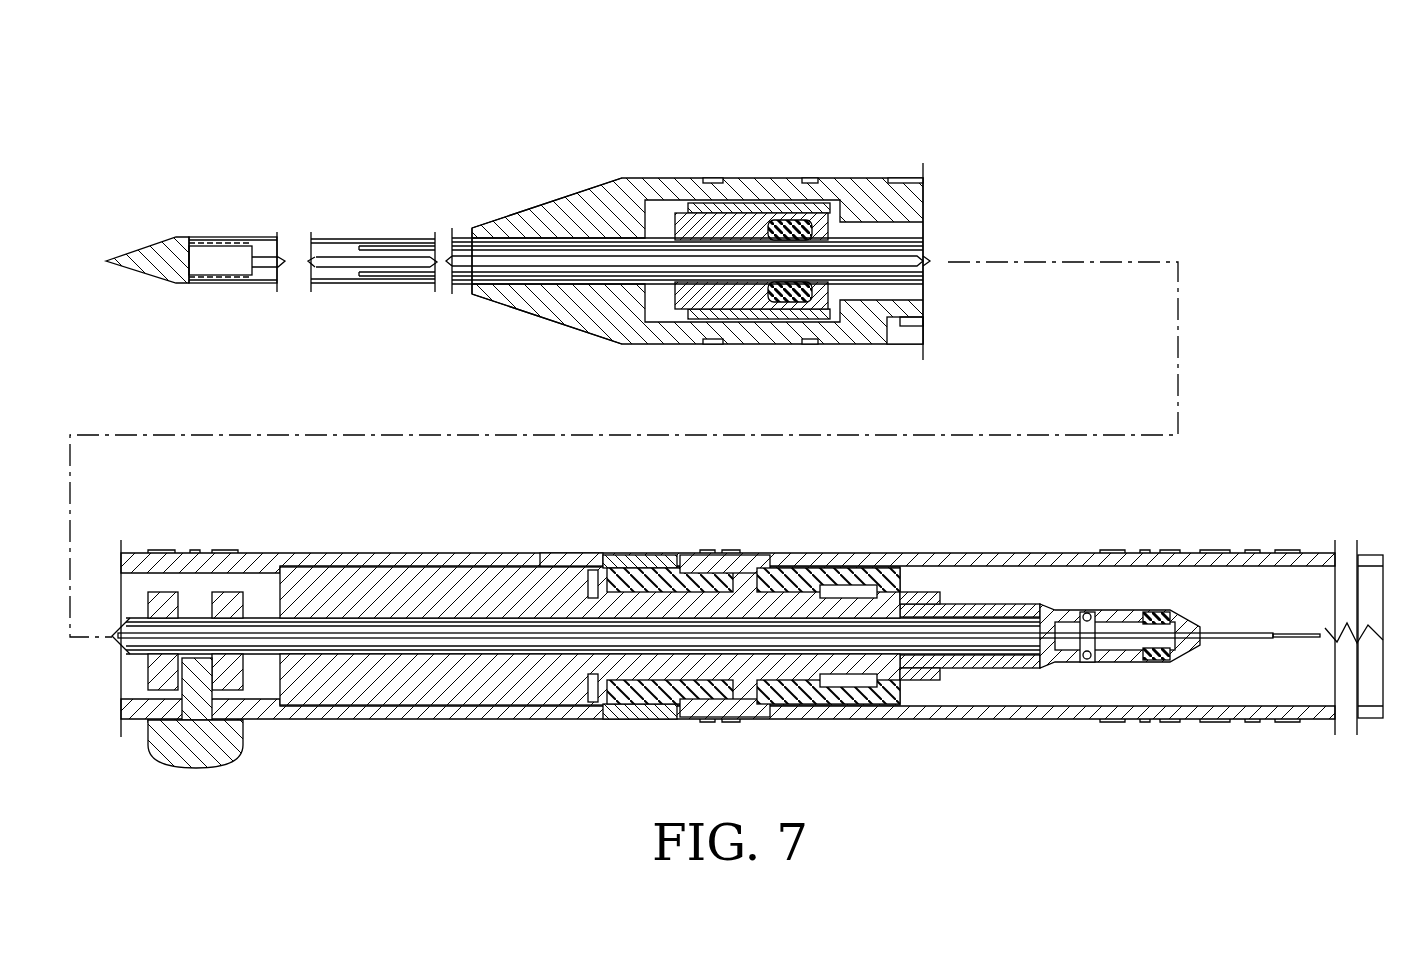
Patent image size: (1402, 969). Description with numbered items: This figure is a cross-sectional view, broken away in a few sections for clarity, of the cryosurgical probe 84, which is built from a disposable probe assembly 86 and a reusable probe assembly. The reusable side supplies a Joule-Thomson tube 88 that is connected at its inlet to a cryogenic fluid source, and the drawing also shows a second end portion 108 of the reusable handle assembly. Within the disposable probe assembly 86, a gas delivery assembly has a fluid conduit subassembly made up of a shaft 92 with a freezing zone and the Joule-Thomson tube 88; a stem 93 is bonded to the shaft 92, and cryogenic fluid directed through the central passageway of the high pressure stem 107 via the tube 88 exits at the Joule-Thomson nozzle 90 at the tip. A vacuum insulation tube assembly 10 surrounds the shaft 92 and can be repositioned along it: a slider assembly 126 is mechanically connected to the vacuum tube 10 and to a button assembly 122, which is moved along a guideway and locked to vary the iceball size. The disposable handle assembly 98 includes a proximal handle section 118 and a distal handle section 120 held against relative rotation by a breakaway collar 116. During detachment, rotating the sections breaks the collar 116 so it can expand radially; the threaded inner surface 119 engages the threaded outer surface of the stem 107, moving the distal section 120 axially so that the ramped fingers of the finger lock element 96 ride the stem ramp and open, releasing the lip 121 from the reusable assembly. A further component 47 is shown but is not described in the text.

The cryosurgical probe 84 is at (1012, 142).
The disposable probe assembly 86 is at (658, 174).
The vacuum insulation tube assembly 10 is at (385, 292).
The Joule-Thomson nozzle 90 is at (255, 238).
The shaft 92 is at (392, 243).
The disposable handle assembly 98 is at (536, 327).
The slider assembly 126 is at (254, 590).
The distal handle section 120 is at (433, 566).
The housing portion 47 is at (557, 553).
The breakaway collar 116 is at (633, 555).
The second end portion 108 is at (708, 555).
The proximal handle section 118 is at (784, 555).
The finger lock element 96 is at (852, 568).
The lip 121 is at (905, 590).
The Joule-Thomson tube 88 is at (1242, 628).
The button assembly 122 is at (234, 770).
The stem 93 is at (466, 705).
The threaded inner surface 119 is at (618, 719).
The stem 107 is at (785, 704).